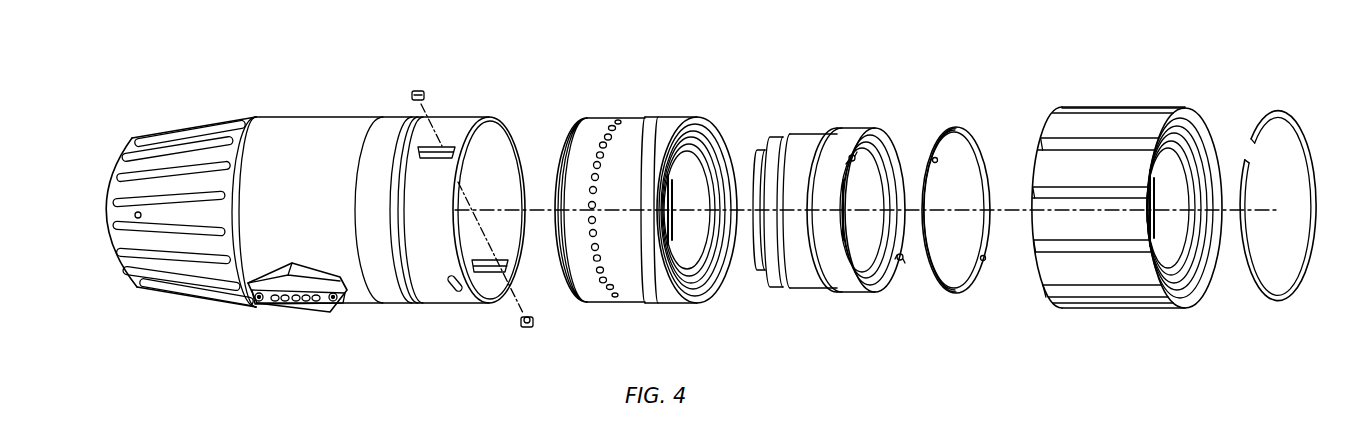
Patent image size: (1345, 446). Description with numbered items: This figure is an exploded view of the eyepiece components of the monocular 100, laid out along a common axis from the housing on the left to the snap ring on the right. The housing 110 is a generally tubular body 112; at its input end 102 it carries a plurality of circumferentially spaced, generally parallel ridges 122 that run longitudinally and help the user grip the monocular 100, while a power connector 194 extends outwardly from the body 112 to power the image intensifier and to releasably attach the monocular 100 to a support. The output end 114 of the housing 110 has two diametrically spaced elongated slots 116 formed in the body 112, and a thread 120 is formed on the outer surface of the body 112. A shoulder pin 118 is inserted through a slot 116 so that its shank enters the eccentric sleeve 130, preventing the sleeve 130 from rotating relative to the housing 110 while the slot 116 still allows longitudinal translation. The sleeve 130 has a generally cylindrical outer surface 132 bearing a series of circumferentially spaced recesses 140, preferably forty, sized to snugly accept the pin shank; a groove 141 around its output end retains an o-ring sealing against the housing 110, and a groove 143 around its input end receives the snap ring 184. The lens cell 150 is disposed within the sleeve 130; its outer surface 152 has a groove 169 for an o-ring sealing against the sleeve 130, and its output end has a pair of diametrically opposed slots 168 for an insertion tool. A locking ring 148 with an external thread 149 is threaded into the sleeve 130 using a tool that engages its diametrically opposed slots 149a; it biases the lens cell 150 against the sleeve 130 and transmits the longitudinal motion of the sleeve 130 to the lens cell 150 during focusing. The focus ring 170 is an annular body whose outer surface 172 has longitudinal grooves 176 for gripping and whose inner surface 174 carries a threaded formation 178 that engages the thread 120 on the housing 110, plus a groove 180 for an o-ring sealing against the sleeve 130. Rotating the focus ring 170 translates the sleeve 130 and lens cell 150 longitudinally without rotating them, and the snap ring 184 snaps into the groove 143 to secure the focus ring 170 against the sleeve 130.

The monocular 100 is at (1313, 52).
The input end 102 is at (114, 155).
The housing 110 is at (298, 114).
The tubular body 112 is at (330, 117).
The output end 114 is at (487, 116).
The elongated slots 116 is at (450, 146).
The shoulder pin 118 is at (418, 90).
The thread 120 is at (416, 303).
The ridges 122 is at (166, 132).
The eccentric sleeve 130 is at (638, 198).
The outer surface 132 is at (590, 118).
The recesses 140 is at (613, 122).
The groove 141 is at (574, 128).
The groove 143 is at (650, 112).
The locking ring 148 is at (986, 194).
The external thread 149 is at (937, 292).
The slots 149a is at (937, 162).
The lens cell 150 is at (833, 200).
The outer surface 152 is at (790, 135).
The slots 168 is at (852, 155).
The groove 169 is at (828, 292).
The focus ring 170 is at (1150, 217).
The outer surface 172 is at (1168, 108).
The inner surface 174 is at (1190, 265).
The longitudinal grooves 176 is at (1070, 108).
The threaded formation 178 is at (1177, 173).
The groove 180 is at (1205, 265).
The snap ring 184 is at (1283, 110).
The power connector 194 is at (297, 315).